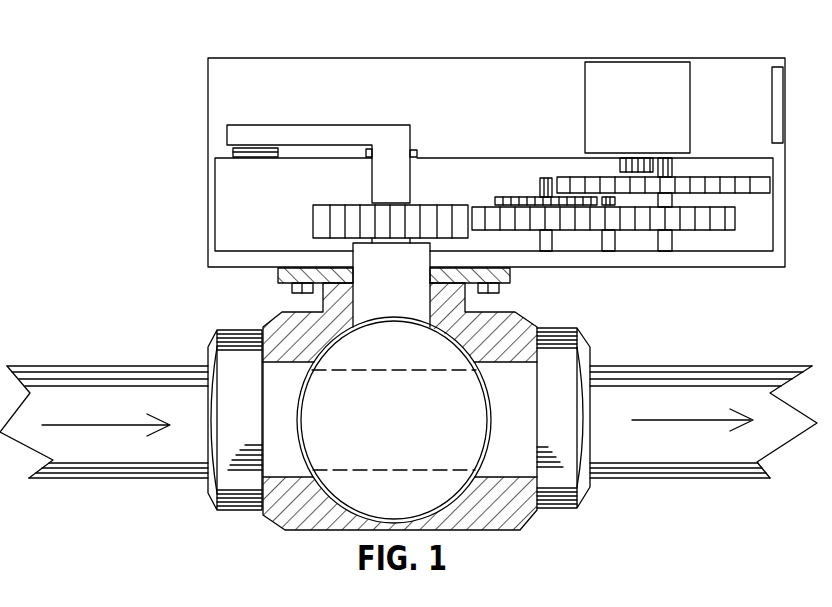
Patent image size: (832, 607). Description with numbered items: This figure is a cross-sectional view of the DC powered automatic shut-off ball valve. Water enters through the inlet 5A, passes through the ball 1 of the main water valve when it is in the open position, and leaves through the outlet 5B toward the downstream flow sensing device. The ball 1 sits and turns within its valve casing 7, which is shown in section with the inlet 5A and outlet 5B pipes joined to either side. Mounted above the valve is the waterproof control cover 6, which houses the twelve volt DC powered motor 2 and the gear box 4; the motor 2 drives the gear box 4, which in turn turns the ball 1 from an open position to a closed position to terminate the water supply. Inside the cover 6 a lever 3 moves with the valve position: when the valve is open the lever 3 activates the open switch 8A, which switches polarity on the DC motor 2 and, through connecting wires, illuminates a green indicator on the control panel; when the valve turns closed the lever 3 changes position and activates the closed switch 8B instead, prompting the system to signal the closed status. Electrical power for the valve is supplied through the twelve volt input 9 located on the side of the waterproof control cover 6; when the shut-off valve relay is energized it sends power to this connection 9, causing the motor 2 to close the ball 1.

The ball 1 is at (351, 430).
The 12 volt DC powered motor 2 is at (633, 140).
The lever 3 is at (265, 135).
The gear box 4 is at (540, 167).
The inlet 5A is at (183, 399).
The outlet 5B is at (623, 450).
The waterproof control cover 6 is at (304, 76).
The valve casing 7 is at (510, 403).
The open switch 8A is at (262, 170).
The closed switch 8B is at (367, 152).
The 12 volt input 9 is at (777, 120).